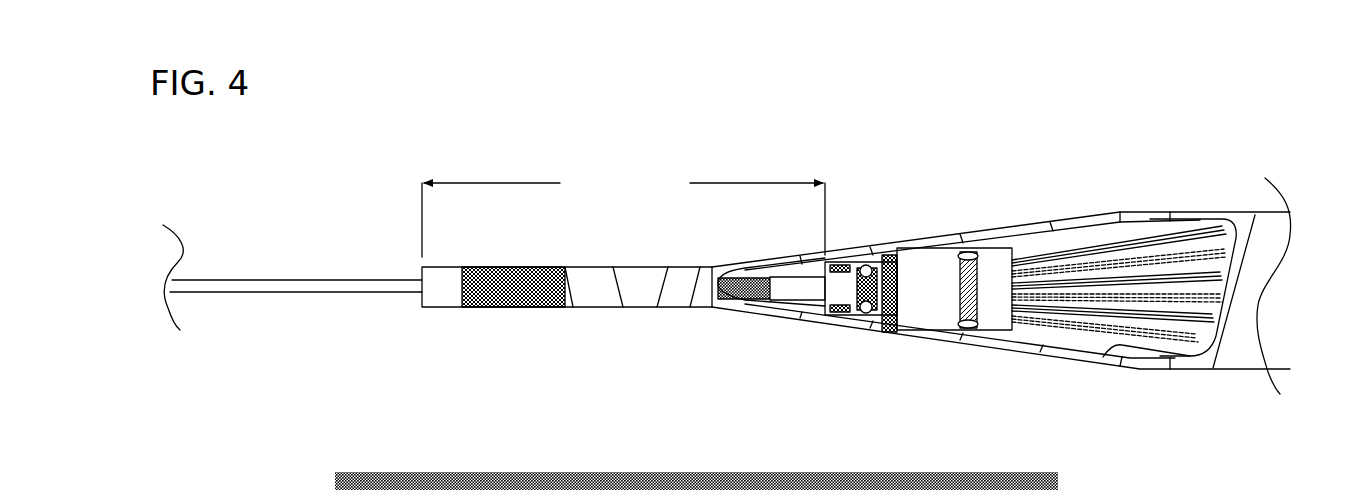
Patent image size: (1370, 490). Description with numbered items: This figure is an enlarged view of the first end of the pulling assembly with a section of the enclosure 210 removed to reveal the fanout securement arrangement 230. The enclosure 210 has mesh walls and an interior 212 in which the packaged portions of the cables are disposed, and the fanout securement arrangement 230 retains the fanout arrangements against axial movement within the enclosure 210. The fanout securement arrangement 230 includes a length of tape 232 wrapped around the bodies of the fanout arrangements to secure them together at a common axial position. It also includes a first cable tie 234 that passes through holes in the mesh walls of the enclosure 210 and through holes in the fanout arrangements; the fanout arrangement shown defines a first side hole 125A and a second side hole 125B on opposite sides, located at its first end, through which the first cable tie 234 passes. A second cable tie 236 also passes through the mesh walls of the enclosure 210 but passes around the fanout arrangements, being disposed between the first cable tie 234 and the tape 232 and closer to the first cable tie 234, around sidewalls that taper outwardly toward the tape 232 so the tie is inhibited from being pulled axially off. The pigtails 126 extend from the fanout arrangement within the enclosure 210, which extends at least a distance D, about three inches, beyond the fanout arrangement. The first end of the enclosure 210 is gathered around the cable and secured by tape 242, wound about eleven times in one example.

The first side hole 125A is at (865, 266).
The second side hole 125B is at (866, 312).
The pigtails 126 is at (1163, 250).
The enclosure 210 is at (1225, 370).
The interior 212 is at (1103, 357).
The fanout securement arrangement 230 is at (884, 234).
The length of tape 232 is at (980, 298).
The first cable tie 234 is at (892, 255).
The second cable tie 236 is at (905, 276).
The tape 242 is at (506, 309).
The distance D is at (623, 215).